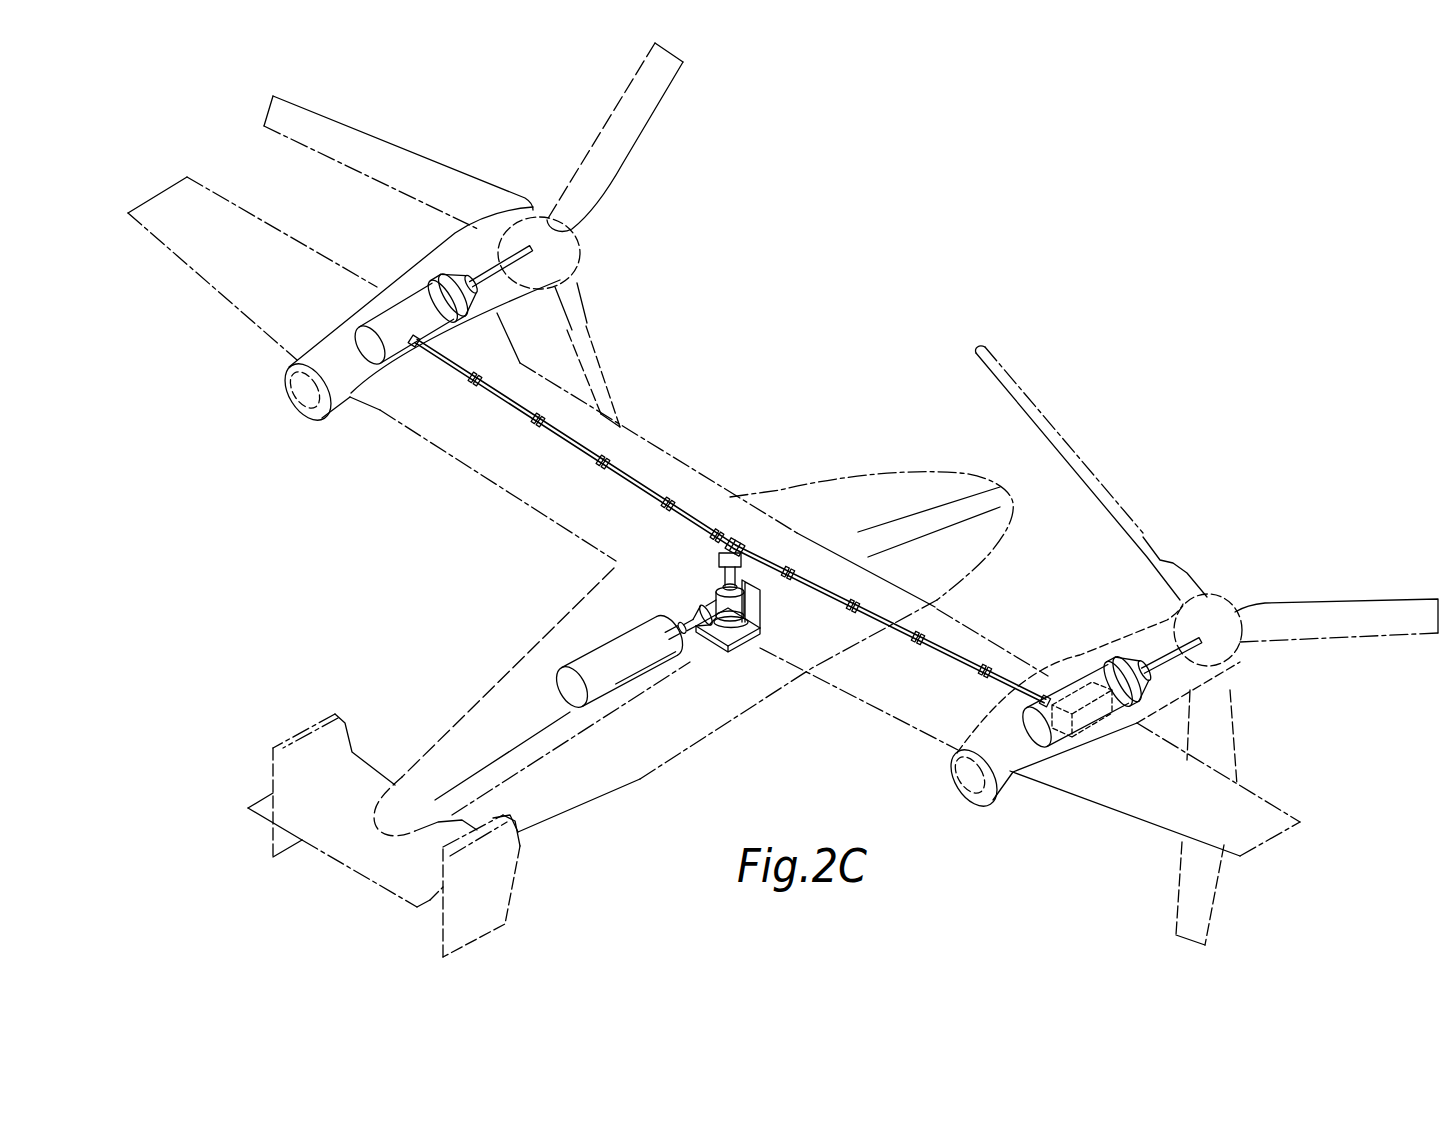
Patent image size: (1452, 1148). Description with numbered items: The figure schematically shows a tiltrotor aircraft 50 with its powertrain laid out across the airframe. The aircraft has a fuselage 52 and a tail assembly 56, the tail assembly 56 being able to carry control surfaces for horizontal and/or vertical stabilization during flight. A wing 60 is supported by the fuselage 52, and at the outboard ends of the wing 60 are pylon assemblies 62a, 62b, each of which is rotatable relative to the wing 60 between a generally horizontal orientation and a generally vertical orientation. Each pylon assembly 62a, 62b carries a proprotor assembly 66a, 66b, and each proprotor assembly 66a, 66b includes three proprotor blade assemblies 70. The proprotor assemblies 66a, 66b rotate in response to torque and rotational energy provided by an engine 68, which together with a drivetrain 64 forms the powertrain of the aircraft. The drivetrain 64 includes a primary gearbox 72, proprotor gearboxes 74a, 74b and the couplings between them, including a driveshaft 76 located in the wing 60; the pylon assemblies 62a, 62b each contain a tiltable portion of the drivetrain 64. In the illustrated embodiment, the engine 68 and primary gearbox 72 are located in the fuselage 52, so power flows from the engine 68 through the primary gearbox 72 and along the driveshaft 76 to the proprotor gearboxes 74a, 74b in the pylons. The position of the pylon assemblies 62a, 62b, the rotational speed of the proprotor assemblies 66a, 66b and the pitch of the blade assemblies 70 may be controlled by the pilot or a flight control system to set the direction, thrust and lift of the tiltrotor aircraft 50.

The tiltrotor aircraft 50 is at (830, 332).
The fuselage 52 is at (693, 750).
The tail assembly 56 is at (352, 850).
The wing 60 is at (533, 486).
The pylon assembly 62a is at (339, 414).
The pylon assembly 62b is at (1005, 797).
The drivetrain 64 is at (697, 516).
The proprotor assembly 66a is at (582, 260).
The proprotor assembly 66b is at (1220, 595).
The engine 68 is at (586, 660).
The proprotor blade assemblies 70 is at (386, 148).
The primary gearbox 72 is at (716, 600).
The proprotor gearbox 74a is at (423, 297).
The proprotor gearbox 74b is at (1092, 670).
The driveshaft 76 is at (648, 490).